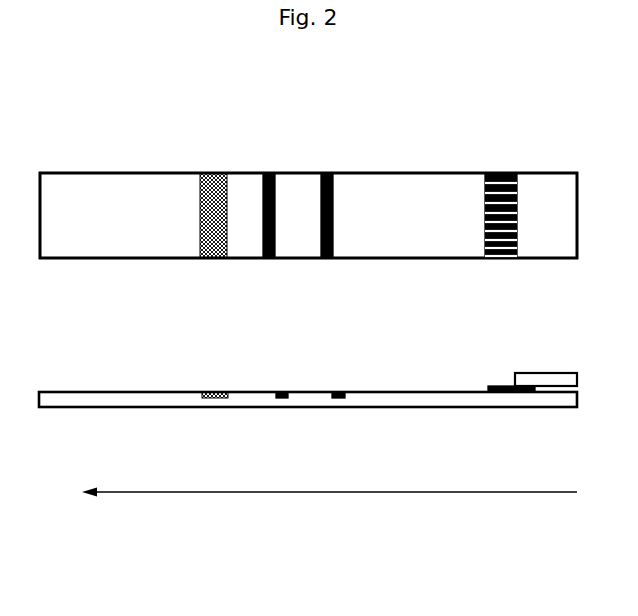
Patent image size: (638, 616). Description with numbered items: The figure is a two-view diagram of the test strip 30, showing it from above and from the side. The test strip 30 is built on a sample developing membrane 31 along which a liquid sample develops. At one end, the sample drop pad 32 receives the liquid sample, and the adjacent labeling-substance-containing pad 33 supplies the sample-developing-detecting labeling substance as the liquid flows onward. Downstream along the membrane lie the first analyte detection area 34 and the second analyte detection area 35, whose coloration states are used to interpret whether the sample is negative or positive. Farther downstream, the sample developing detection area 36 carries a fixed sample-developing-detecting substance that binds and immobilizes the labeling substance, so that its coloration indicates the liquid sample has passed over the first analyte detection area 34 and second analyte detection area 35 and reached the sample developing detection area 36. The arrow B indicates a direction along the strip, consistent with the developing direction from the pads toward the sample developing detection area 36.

The test strip 30 is at (296, 122).
The sample developing membrane 31 is at (130, 258).
The sample drop pad 32 is at (551, 258).
The labeling-substance-containing pad 33 is at (508, 258).
The first analyte detection area 34 is at (327, 258).
The second analyte detection area 35 is at (270, 258).
The sample developing detection area 36 is at (213, 258).
The direction B is at (315, 494).